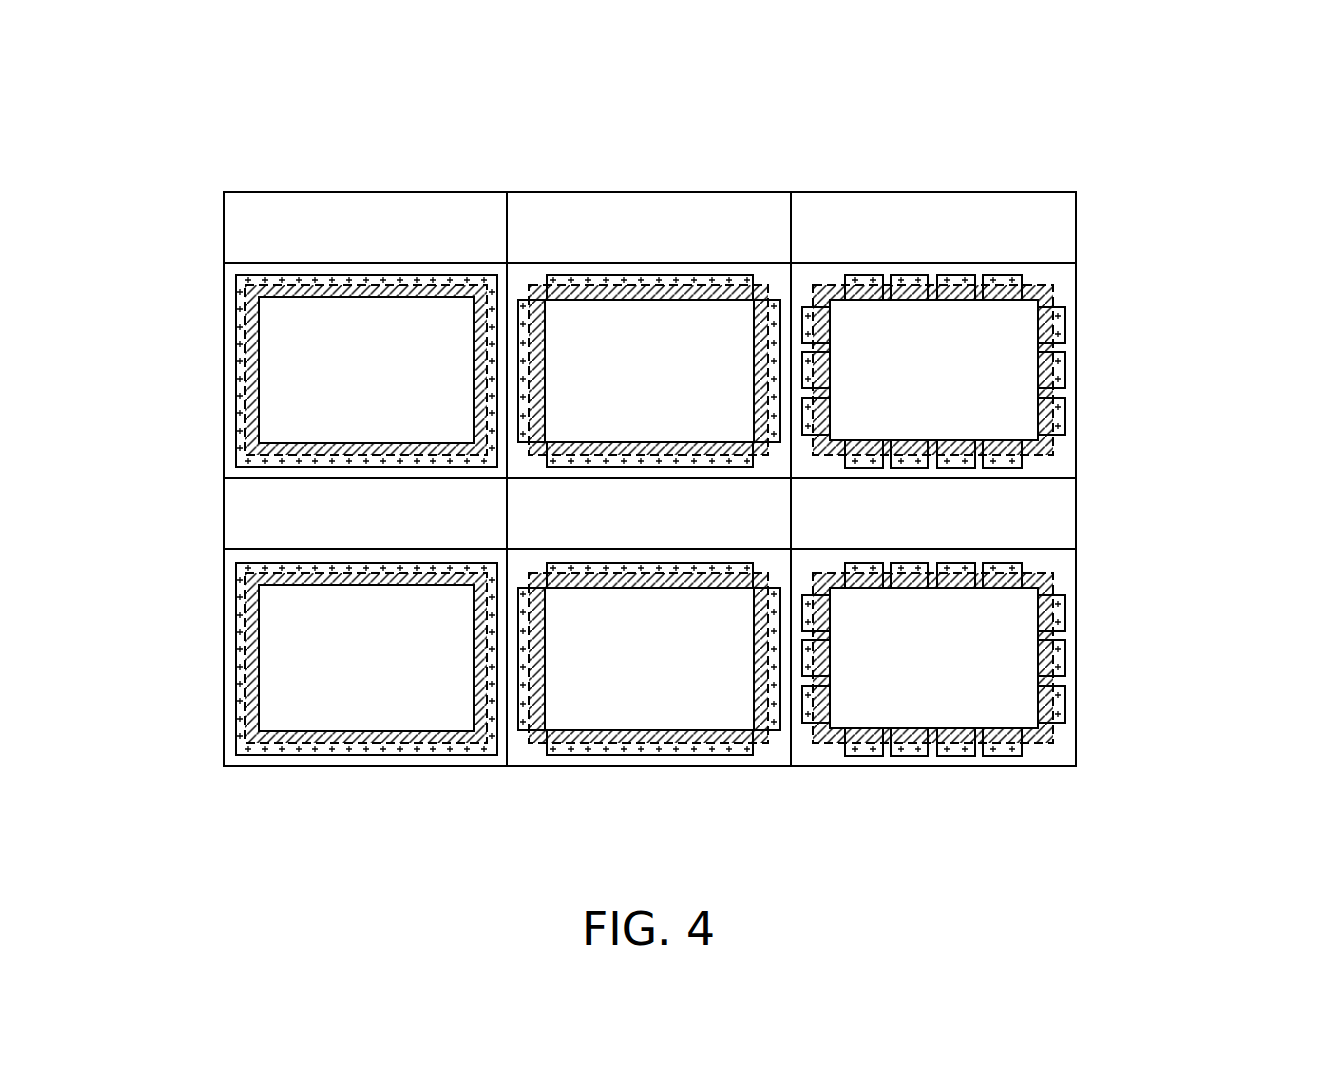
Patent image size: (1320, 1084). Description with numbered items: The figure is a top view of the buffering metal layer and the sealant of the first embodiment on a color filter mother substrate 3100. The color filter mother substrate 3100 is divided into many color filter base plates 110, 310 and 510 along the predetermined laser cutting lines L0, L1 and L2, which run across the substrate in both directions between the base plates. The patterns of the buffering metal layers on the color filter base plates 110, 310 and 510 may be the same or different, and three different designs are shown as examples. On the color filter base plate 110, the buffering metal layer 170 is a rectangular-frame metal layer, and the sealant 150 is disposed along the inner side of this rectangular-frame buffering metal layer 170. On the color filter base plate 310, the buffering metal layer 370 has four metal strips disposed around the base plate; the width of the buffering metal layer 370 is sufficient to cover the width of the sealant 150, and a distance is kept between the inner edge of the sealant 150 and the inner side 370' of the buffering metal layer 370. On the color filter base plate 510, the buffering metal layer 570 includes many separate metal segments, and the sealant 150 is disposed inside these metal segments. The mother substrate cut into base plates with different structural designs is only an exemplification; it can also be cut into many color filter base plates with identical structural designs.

The color filter base plate 110 is at (363, 192).
The color filter base plate 310 is at (648, 192).
The color filter base plate 510 is at (932, 192).
The color filter mother substrate 3100 is at (1265, 95).
The sealant 150 is at (250, 358).
The buffering metal layer 170 is at (245, 310).
The buffering metal layer 370 is at (663, 303).
The inner side of the buffering metal layer 370' is at (610, 371).
The buffering metal layer 570 is at (1019, 275).
The predetermined laser cutting line L0 is at (508, 228).
The predetermined laser cutting line L1 is at (440, 262).
The predetermined laser cutting line L2 is at (1048, 480).